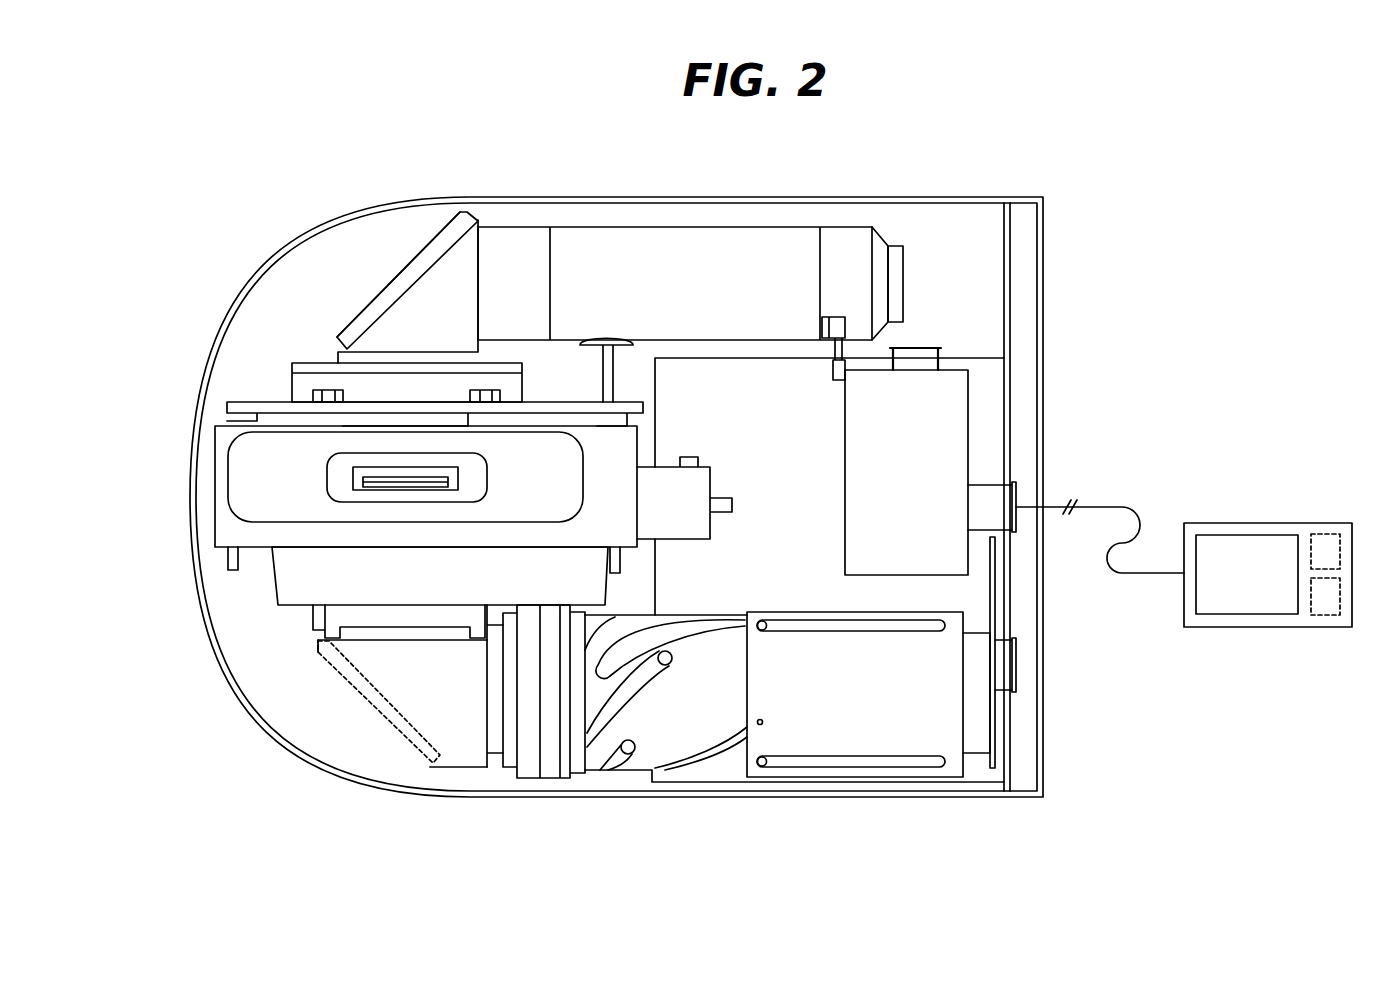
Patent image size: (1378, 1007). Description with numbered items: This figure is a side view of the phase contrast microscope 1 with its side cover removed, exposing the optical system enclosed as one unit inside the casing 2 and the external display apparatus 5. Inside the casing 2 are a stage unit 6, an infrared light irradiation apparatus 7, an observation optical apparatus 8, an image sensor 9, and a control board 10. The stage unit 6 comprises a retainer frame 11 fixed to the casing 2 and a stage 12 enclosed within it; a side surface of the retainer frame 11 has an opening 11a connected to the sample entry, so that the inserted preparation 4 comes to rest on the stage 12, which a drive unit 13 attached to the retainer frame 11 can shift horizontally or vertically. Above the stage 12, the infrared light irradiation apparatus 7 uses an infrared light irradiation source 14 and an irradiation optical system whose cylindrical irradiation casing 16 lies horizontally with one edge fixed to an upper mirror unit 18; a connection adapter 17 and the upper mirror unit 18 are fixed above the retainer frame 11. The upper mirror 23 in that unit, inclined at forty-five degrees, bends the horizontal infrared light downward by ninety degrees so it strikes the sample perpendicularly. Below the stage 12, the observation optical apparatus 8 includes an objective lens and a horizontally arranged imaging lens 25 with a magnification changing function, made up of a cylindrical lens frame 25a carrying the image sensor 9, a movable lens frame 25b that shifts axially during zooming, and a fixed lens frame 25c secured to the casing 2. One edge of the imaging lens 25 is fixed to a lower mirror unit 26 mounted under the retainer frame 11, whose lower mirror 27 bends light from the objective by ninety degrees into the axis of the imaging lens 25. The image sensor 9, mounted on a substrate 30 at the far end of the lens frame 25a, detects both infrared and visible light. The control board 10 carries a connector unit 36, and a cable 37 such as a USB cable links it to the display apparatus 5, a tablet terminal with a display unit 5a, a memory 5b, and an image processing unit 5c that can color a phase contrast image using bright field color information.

The phase contrast microscope 1 is at (984, 196).
The casing 2 is at (1046, 262).
The preparation 4 is at (390, 481).
The display apparatus 5 is at (1253, 520).
The display unit 5a is at (1237, 590).
The memory 5b is at (1322, 546).
The image processing unit 5c is at (1322, 600).
The stage unit 6 is at (214, 505).
The infrared light irradiation apparatus 7 is at (697, 226).
The observation optical apparatus 8 is at (604, 771).
The image sensor 9 is at (992, 716).
The control board 10 is at (775, 378).
The retainer frame 11 is at (214, 467).
The opening 11a is at (262, 524).
The stage 12 is at (425, 487).
The drive unit 13 is at (697, 478).
The infrared light irradiation source 14 is at (897, 244).
The irradiation casing 16 is at (618, 258).
The connection adapter 17 is at (335, 383).
The upper mirror unit 18 is at (436, 283).
The upper mirror 23 is at (387, 282).
The imaging lens 25 is at (753, 696).
The lens frame 25a is at (870, 730).
The movable lens frame 25b is at (693, 727).
The fixed lens frame 25c is at (548, 770).
The lower mirror unit 26 is at (462, 740).
The lower mirror 27 is at (378, 703).
The substrate 30 is at (996, 594).
The connector unit 36 is at (940, 413).
The cable 37 is at (1118, 503).